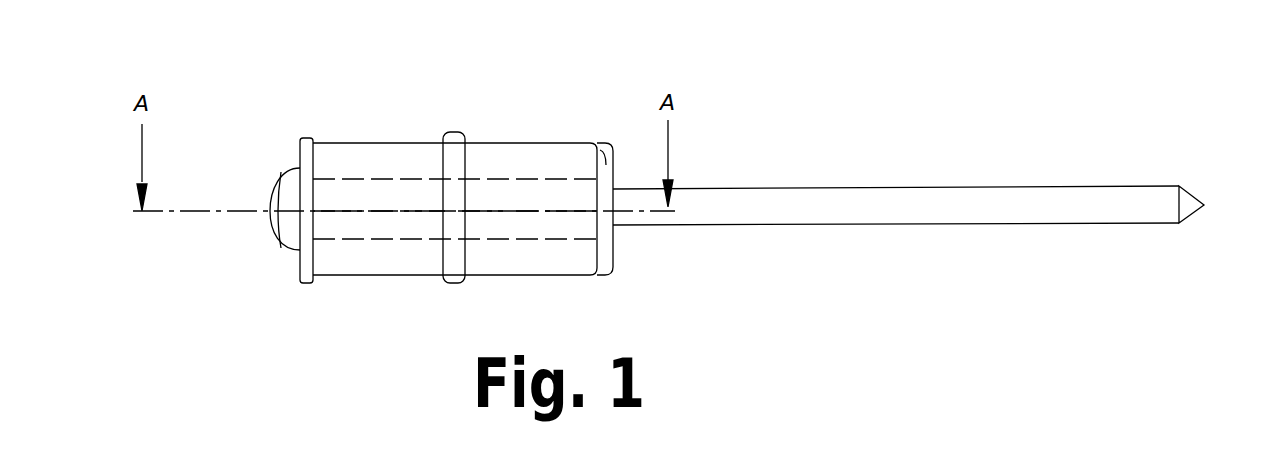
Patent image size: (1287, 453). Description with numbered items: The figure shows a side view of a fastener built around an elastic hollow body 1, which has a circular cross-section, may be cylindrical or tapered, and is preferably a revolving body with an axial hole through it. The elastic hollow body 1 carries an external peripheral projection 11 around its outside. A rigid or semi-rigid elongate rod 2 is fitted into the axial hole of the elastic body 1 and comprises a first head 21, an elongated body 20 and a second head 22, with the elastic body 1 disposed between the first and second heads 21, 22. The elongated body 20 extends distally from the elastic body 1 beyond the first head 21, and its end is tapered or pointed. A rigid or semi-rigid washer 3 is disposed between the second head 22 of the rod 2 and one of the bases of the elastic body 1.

The elastic hollow body 1 is at (392, 143).
The elongate rod 2 is at (908, 183).
The washer 3 is at (305, 138).
The external peripheral projection 11 is at (460, 131).
The elongated body 20 is at (865, 200).
The first head 21 is at (608, 143).
The second head 22 is at (290, 170).